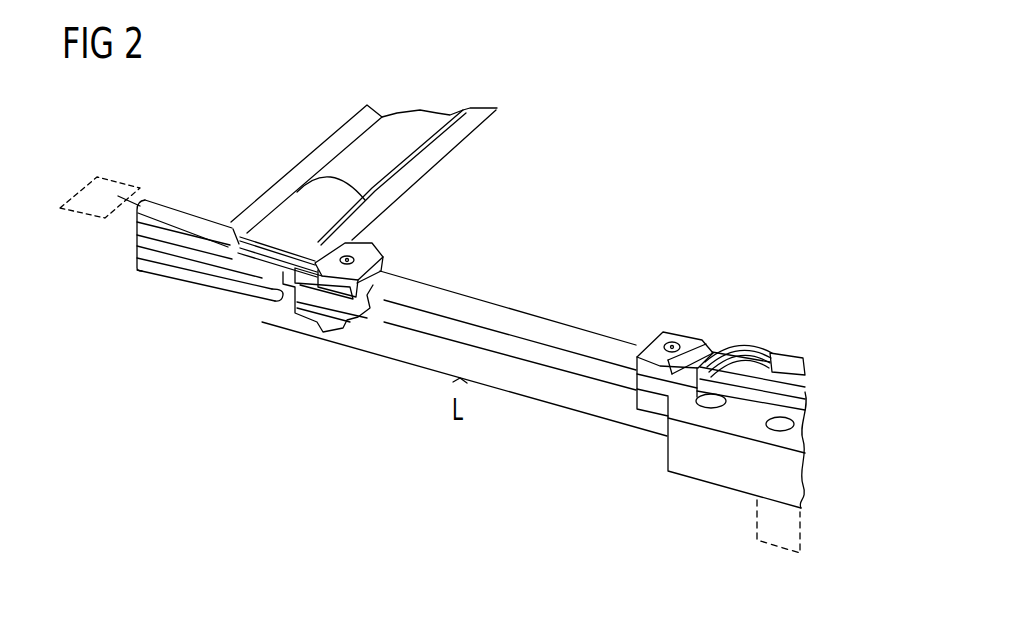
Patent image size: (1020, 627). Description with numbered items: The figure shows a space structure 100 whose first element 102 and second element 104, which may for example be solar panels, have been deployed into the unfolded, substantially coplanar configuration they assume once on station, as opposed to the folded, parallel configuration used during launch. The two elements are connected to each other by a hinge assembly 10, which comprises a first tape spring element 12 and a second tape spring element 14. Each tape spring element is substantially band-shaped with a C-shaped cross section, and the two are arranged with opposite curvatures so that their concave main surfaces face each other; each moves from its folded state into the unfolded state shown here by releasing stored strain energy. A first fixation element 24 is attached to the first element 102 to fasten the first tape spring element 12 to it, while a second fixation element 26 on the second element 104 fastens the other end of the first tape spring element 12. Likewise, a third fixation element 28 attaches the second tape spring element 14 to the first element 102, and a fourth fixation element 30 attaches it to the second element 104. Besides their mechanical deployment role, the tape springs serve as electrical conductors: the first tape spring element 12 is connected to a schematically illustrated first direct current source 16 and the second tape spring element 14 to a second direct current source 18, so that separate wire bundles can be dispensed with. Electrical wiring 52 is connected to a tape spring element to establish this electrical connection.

The hinge assembly 10 is at (410, 412).
The first tape spring element 12 is at (491, 301).
The second tape spring element 14 is at (550, 338).
The first direct current source 16 is at (121, 184).
The second direct current source 18 is at (760, 540).
The first fixation element 24 is at (370, 249).
The second fixation element 26 is at (684, 334).
The third fixation element 28 is at (340, 322).
The fourth fixation element 30 is at (650, 405).
The electrical wiring 52 is at (303, 256).
The space structure 100 is at (682, 222).
The first element 102 is at (221, 201).
The second element 104 is at (707, 476).